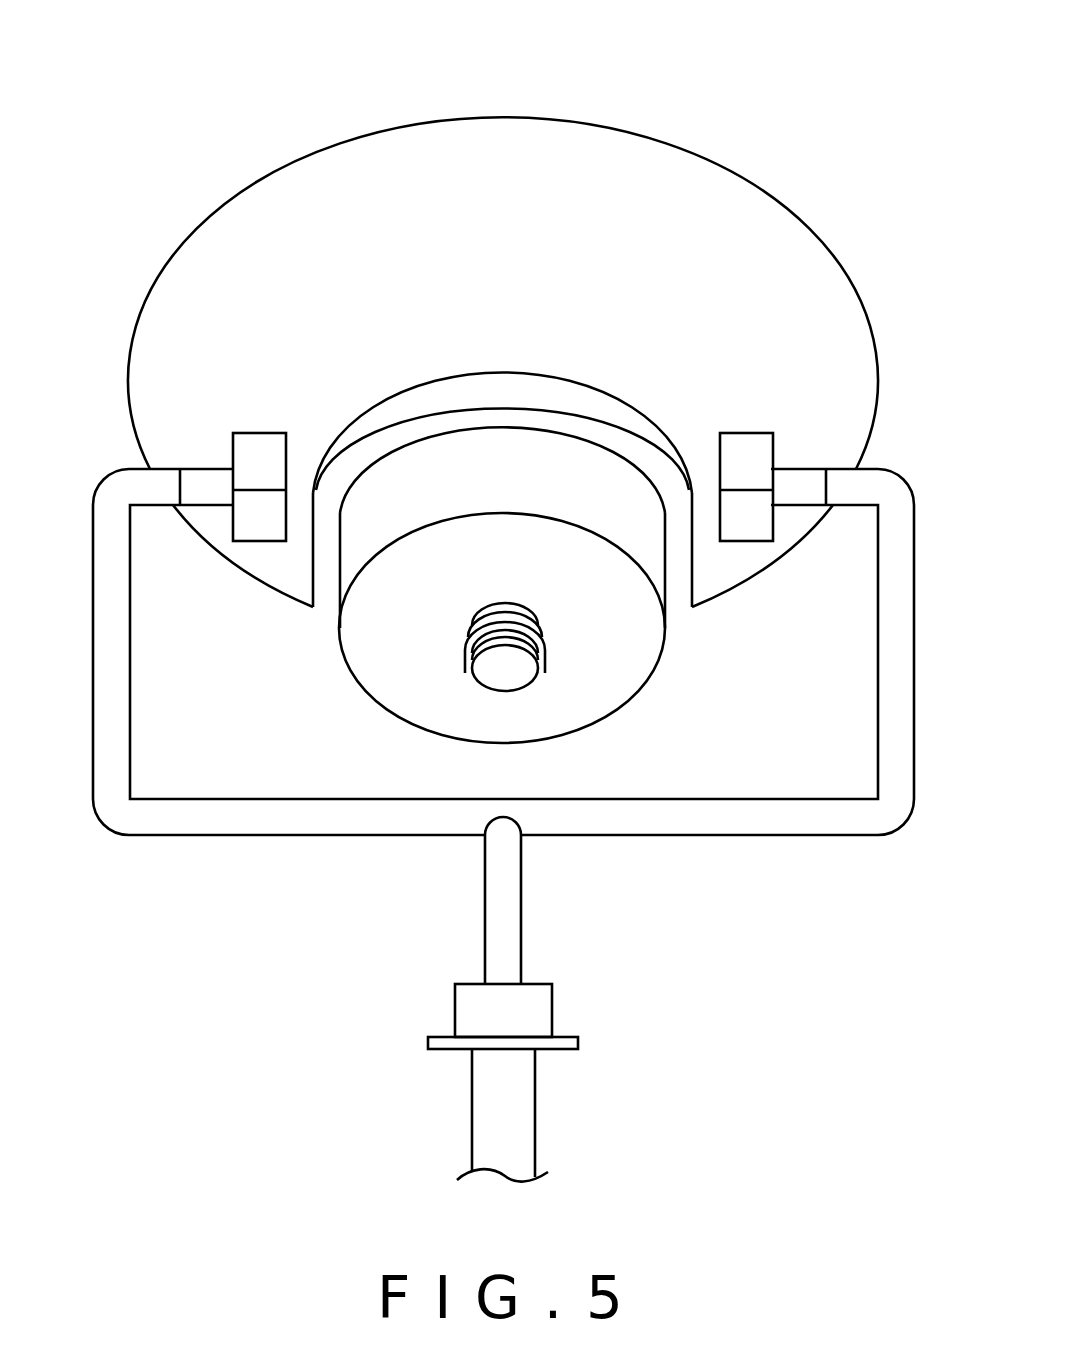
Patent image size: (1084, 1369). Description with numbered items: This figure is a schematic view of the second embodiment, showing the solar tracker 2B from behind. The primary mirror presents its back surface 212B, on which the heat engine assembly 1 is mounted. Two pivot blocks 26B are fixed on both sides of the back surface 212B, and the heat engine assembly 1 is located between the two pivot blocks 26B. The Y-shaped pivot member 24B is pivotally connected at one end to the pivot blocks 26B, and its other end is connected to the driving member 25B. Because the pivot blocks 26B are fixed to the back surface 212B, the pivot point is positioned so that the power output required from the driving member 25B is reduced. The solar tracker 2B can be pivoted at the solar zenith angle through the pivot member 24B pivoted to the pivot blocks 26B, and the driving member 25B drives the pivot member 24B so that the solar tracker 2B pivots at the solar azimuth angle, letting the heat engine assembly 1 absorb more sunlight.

The solar tracker 2B is at (680, 100).
The back surface 212B is at (232, 272).
The pivot blocks 26B is at (258, 450).
The heat engine assembly 1 is at (332, 691).
The pivot member 24B is at (512, 916).
The driving member 25B is at (537, 1014).